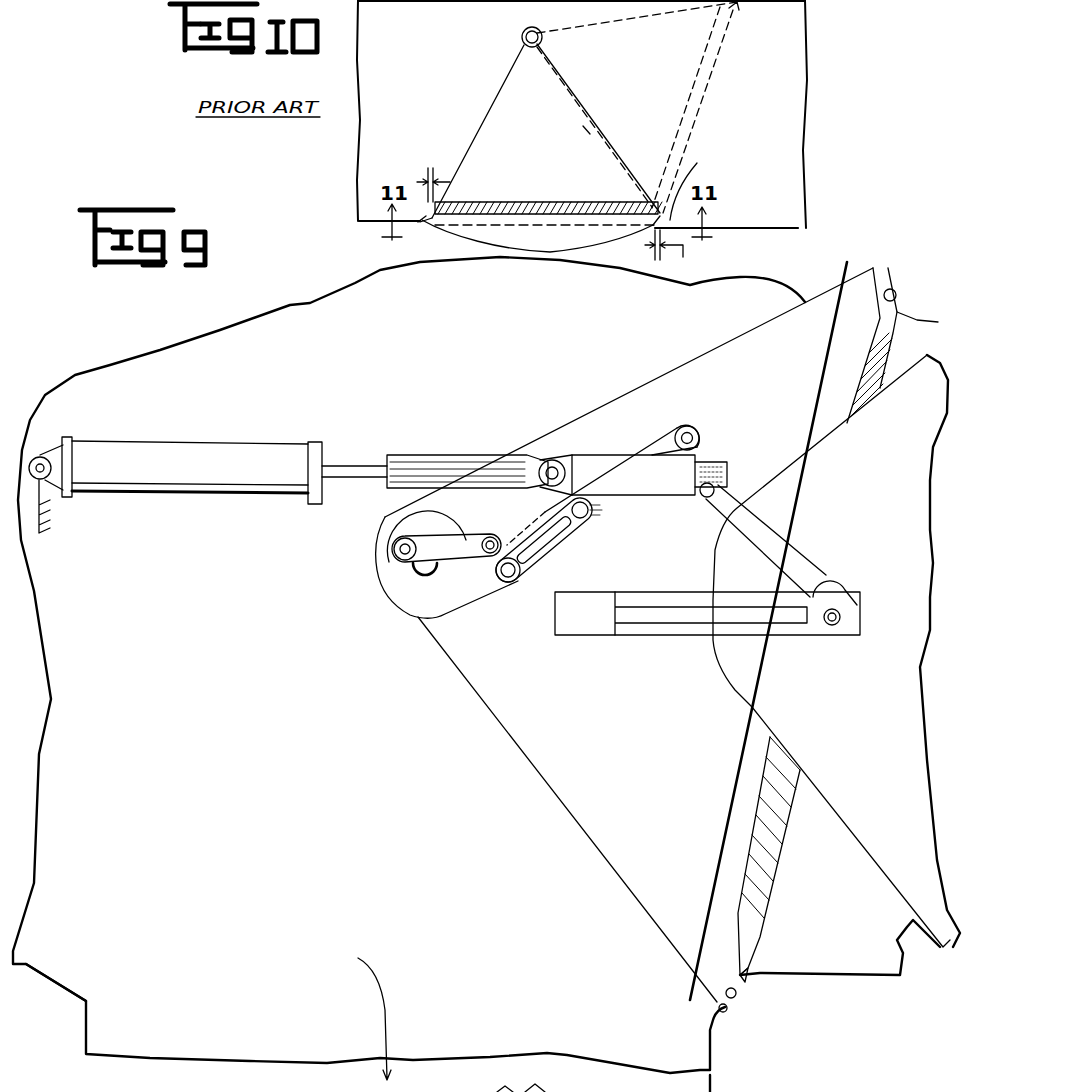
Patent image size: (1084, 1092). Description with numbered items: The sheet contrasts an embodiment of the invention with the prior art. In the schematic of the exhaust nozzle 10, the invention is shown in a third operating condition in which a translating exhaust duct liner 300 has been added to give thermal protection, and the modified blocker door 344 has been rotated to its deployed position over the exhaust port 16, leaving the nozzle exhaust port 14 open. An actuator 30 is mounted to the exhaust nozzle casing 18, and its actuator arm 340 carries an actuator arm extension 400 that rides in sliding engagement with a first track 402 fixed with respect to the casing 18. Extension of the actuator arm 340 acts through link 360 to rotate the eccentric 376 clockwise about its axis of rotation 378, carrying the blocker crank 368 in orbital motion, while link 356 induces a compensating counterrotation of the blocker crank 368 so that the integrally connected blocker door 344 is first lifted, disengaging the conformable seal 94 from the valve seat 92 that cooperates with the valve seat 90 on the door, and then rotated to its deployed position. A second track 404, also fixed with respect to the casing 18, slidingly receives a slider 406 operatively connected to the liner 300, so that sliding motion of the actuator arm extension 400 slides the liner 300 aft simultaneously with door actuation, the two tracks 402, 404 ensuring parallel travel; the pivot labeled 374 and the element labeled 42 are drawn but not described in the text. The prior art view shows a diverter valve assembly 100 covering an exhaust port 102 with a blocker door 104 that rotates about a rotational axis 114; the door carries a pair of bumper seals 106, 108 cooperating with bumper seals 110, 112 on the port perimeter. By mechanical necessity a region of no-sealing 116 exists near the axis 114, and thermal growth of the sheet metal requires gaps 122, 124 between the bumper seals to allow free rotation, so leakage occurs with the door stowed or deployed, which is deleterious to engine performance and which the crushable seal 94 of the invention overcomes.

In FIG. 9, the exhaust nozzle 10 is at (184, 317).
In FIG. 9, the nozzle exhaust port 14 is at (710, 1046).
In FIG. 9, the exhaust port 16 is at (943, 587).
In FIG. 10, the exhaust nozzle casing 18 is at (755, 232).
In FIG. 9, the exhaust nozzle casing 18 is at (822, 982).
In FIG. 9, the actuator 30 is at (224, 431).
In FIG. 9, the housing portion 42 is at (64, 988).
In FIG. 9, the valve seat 90 is at (745, 975).
In FIG. 9, the valve seat 92 is at (728, 1018).
In FIG. 9, the conformable seal 94 is at (740, 994).
In FIG. 10, the prior art diverter valve assembly 100 is at (600, 102).
In FIG. 10, the exhaust port 102 is at (498, 253).
In FIG. 10, the blocker door 104 is at (585, 130).
In FIG. 10, the bumper seal 106 is at (458, 226).
In FIG. 10, the bumper seal 108 is at (700, 165).
In FIG. 10, the bumper seal 110 is at (420, 223).
In FIG. 10, the bumper seal 112 is at (650, 231).
In FIG. 10, the blocker door rotational axis 114 is at (521, 36).
In FIG. 9, the blocker door rotational axis 114 is at (543, 1076).
In FIG. 9, the region of no-sealing 116 is at (511, 1079).
In FIG. 10, the gap 122 is at (417, 182).
In FIG. 10, the gap 124 is at (673, 254).
In FIG. 9, the translating exhaust duct liner 300 is at (890, 793).
In FIG. 9, the actuator arm 340 is at (347, 463).
In FIG. 9, the blocker door 344 is at (775, 890).
In FIG. 9, the link 356 is at (546, 519).
In FIG. 9, the link 360 is at (549, 545).
In FIG. 9, the blocker crank 368 is at (463, 546).
In FIG. 9, the pivot 374 is at (395, 550).
In FIG. 9, the eccentric 376 is at (483, 586).
In FIG. 9, the axis of rotation 378 is at (428, 573).
In FIG. 9, the actuator arm extension 400 is at (600, 462).
In FIG. 9, the first track 402 is at (712, 472).
In FIG. 9, the second track 404 is at (697, 583).
In FIG. 9, the slider 406 is at (848, 622).